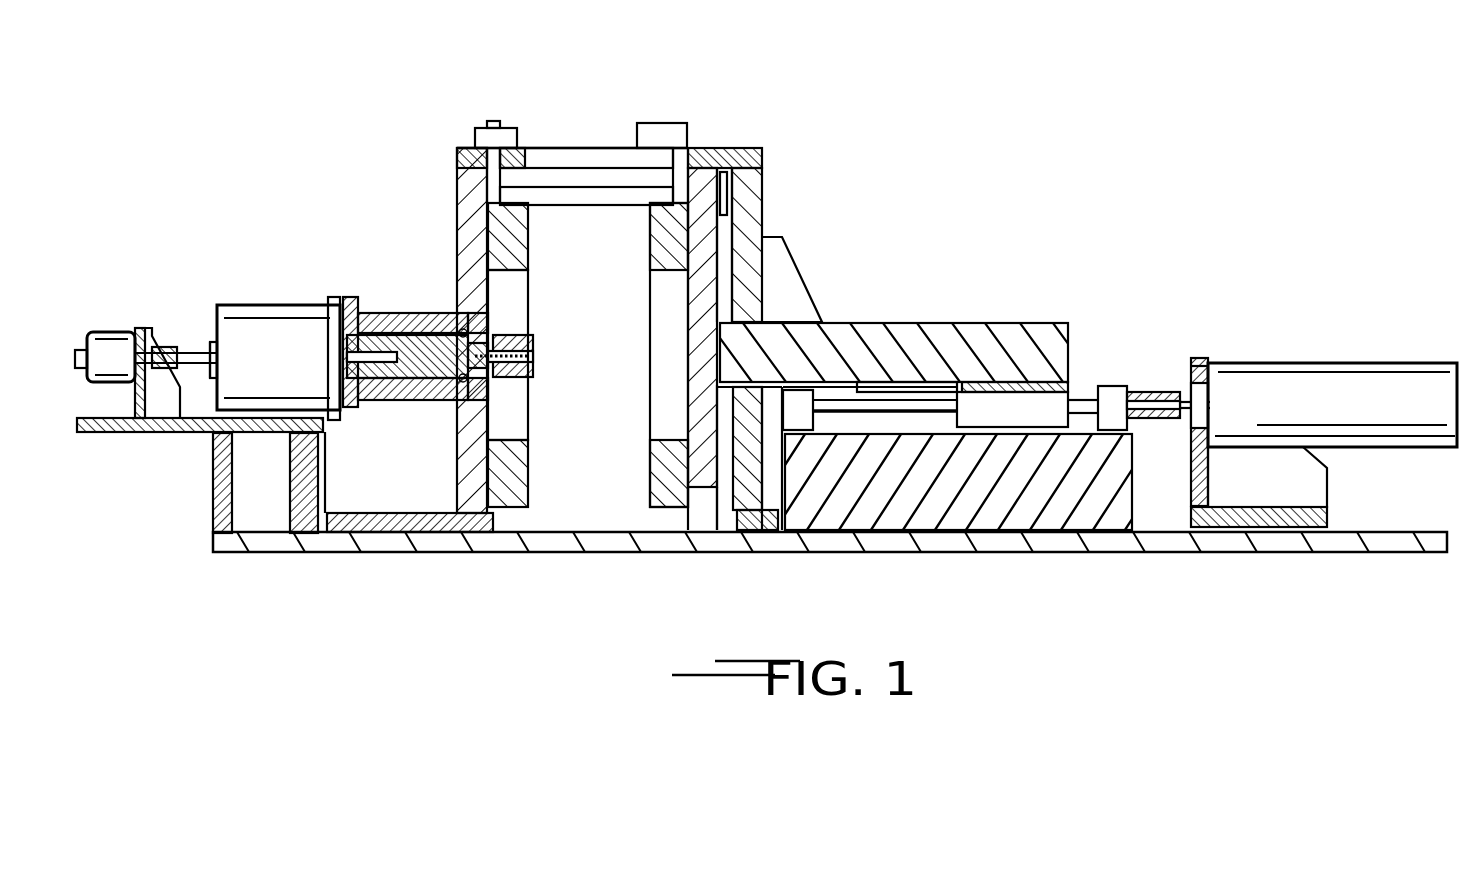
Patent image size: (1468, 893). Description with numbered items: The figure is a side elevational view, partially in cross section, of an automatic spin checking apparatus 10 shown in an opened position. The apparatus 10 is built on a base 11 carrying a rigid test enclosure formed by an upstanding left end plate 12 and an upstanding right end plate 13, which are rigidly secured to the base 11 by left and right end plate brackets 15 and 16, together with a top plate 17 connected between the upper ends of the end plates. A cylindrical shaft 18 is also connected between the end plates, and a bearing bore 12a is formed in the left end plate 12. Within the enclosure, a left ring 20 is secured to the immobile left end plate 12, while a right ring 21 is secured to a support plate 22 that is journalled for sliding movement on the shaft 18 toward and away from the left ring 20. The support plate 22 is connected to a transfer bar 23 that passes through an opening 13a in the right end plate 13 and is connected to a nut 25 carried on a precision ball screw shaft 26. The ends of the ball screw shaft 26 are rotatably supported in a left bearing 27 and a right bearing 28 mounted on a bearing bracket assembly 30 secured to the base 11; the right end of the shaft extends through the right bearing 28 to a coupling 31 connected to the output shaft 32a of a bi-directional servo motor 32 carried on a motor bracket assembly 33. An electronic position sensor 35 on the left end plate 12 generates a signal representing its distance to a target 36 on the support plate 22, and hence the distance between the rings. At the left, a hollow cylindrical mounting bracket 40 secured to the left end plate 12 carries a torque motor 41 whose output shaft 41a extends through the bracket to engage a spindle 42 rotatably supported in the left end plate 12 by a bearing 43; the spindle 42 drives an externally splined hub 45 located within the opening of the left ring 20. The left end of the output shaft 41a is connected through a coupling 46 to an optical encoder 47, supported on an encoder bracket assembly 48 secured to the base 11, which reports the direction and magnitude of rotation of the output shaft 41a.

The automatic spin checking apparatus 10 is at (957, 160).
The base 11 is at (1003, 535).
The left end plate 12 is at (470, 484).
The bore 12a is at (512, 330).
The right end plate 13 is at (750, 505).
The opening 13a is at (748, 340).
The left end plate bracket 15 is at (447, 263).
The right end plate bracket 16 is at (783, 278).
The top plate 17 is at (572, 160).
The cylindrical shaft 18 is at (585, 200).
The left ring 20 is at (512, 505).
The right ring 21 is at (672, 500).
The support plate 22 is at (707, 482).
The transfer bar 23 is at (953, 356).
The nut 25 is at (1037, 408).
The precision ball screw shaft 26 is at (902, 404).
The left bearing 27 is at (795, 410).
The right bearing 28 is at (1108, 392).
The bearing bracket assembly 30 is at (1085, 425).
The coupling 31 is at (1158, 395).
The bi-directional servo motor 32 is at (1310, 419).
The output shaft 32a is at (1210, 400).
The motor bracket assembly 33 is at (1288, 496).
The electronic position sensor 35 is at (508, 128).
The target 36 is at (658, 125).
The mounting bracket 40 is at (392, 410).
The torque motor 41 is at (252, 375).
The output shaft 41a is at (196, 348).
The spindle 42 is at (430, 405).
The bearing 43 is at (462, 320).
The externally splined hub 45 is at (533, 345).
The coupling 46 is at (164, 348).
The optical encoder 47 is at (112, 333).
The encoder bracket assembly 48 is at (168, 433).